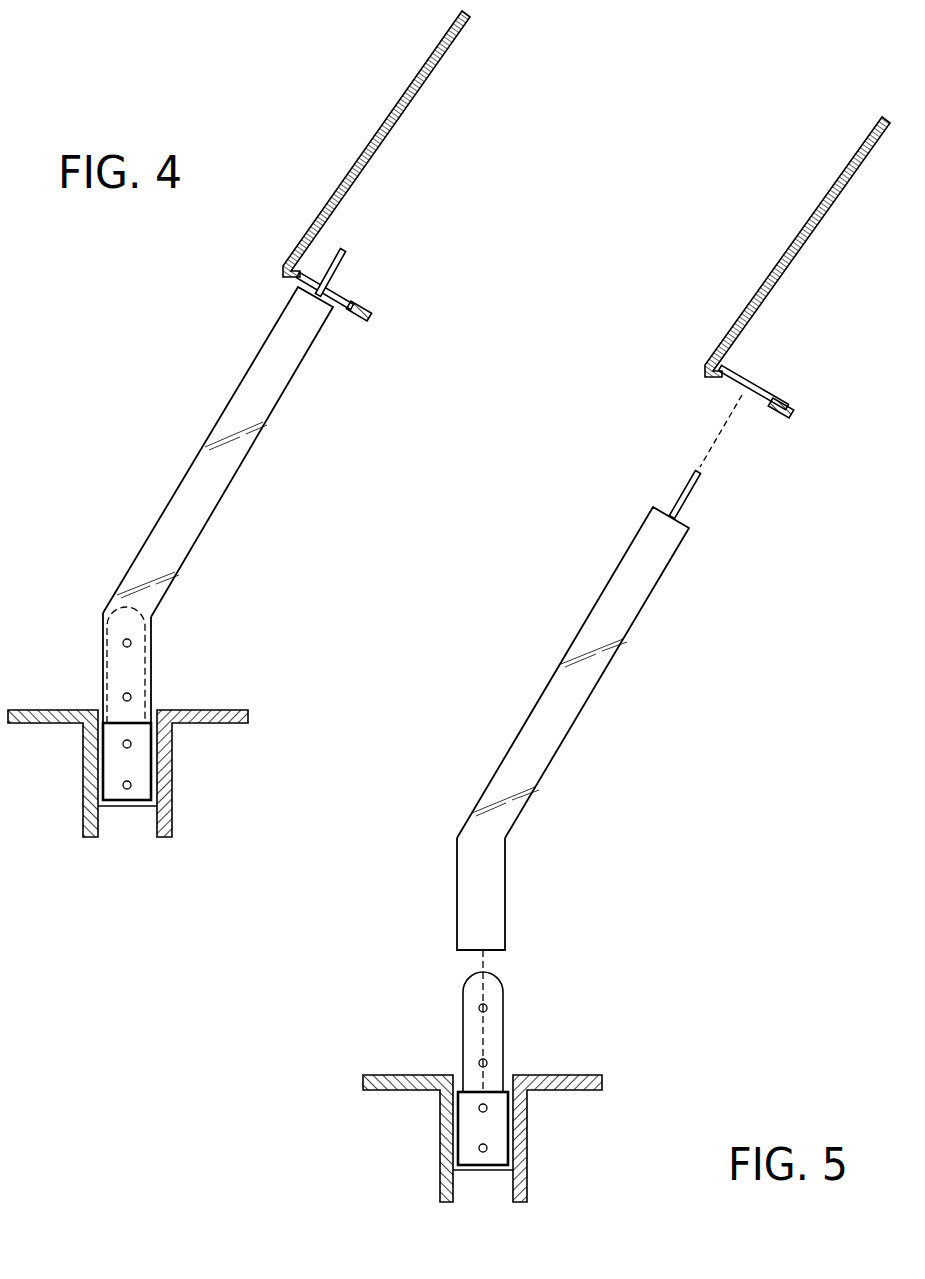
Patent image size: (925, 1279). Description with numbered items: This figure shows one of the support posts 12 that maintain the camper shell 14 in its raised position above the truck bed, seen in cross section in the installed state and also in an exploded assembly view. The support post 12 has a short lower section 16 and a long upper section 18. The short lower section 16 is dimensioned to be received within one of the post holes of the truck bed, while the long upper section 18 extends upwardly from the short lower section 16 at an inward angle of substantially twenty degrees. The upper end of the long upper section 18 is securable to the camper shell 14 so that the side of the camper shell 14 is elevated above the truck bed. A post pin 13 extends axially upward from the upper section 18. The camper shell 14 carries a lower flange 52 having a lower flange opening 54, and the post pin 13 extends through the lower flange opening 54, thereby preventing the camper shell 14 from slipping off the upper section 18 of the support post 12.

In FIG. 4, the support post 12 is at (185, 543).
In FIG. 5, the support post 12 is at (573, 836).
In FIG. 4, the post pin 13 is at (335, 280).
In FIG. 5, the post pin 13 is at (685, 500).
In FIG. 4, the camper shell 14 is at (352, 163).
In FIG. 5, the camper shell 14 is at (777, 262).
In FIG. 4, the short lower section 16 is at (103, 677).
In FIG. 5, the short lower section 16 is at (505, 890).
In FIG. 4, the long upper section 18 is at (163, 512).
In FIG. 5, the long upper section 18 is at (628, 630).
In FIG. 4, the lower flange 52 is at (342, 308).
In FIG. 5, the lower flange 52 is at (793, 402).
In FIG. 4, the lower flange opening 54 is at (367, 311).
In FIG. 5, the lower flange opening 54 is at (758, 406).